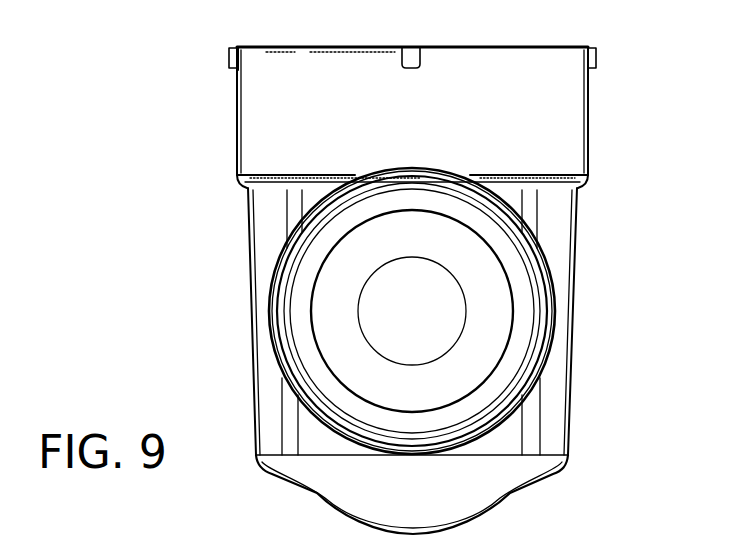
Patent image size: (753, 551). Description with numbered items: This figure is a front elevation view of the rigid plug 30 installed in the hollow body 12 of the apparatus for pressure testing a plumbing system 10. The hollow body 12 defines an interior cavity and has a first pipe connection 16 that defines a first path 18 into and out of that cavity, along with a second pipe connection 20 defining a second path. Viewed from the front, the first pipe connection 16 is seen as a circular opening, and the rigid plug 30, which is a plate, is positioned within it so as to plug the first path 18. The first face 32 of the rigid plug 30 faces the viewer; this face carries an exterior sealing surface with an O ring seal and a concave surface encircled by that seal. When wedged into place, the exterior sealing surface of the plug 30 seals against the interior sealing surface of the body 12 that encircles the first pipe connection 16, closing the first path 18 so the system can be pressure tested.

The plumbing system 10 is at (320, 316).
The hollow body 12 is at (522, 47).
The second pipe connection 20 is at (257, 35).
The first pipe connection 16 is at (541, 250).
The first path 18 is at (542, 282).
The rigid plug 30 is at (493, 343).
The first face 32 is at (480, 372).